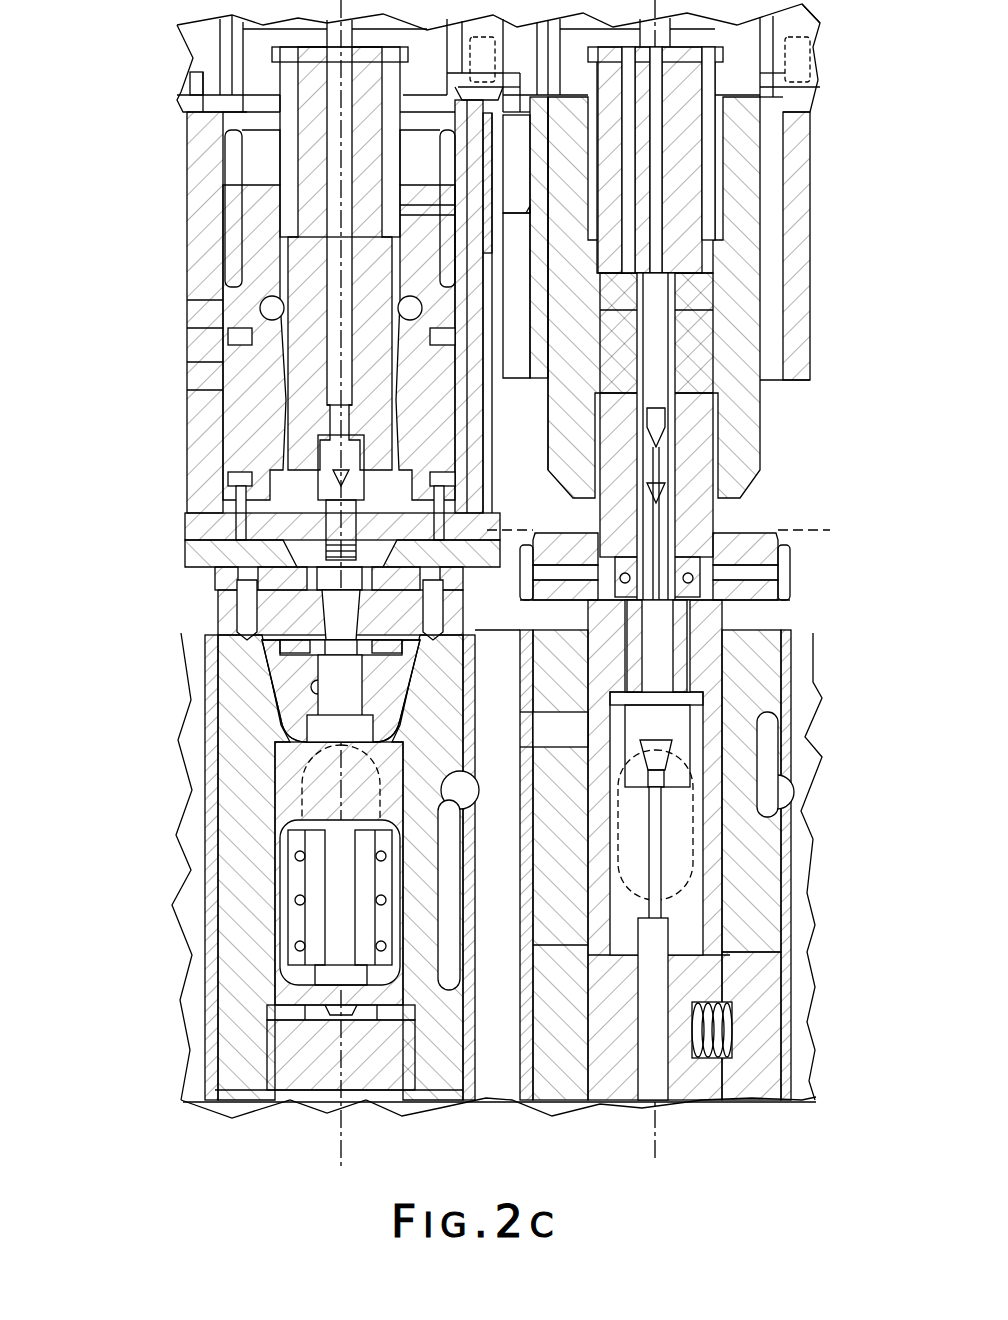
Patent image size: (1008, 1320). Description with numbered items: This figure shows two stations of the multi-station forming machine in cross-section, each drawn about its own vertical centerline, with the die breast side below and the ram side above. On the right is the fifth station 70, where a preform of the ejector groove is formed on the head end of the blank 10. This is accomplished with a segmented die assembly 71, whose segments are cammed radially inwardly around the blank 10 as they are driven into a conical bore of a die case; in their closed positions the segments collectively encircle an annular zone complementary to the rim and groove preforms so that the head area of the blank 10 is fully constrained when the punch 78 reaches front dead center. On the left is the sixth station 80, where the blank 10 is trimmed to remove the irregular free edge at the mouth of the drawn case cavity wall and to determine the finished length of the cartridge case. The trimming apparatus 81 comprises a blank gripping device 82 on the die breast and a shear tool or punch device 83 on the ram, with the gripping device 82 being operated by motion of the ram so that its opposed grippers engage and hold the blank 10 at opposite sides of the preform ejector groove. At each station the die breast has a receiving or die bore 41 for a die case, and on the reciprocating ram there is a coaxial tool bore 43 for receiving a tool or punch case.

The trimming apparatus 81 is at (135, 468).
The shear tool or punch device 83 is at (185, 519).
The blank 10 is at (300, 590).
The blank gripping device 82 is at (268, 650).
The die bore 41 is at (222, 806).
The tool bore 43 is at (757, 345).
The punch 78 is at (690, 532).
The segmented die assembly 71 is at (712, 600).
The sixth station 80 is at (341, 1143).
The fifth station 70 is at (655, 1143).